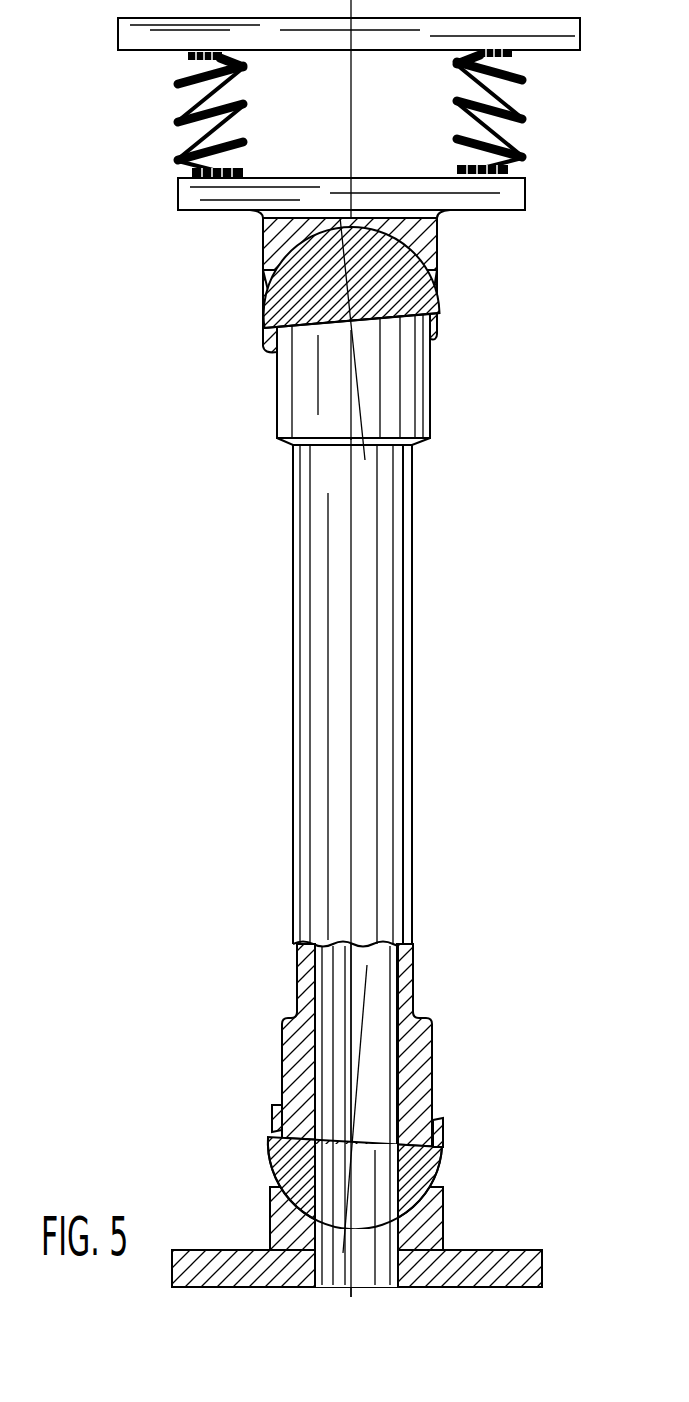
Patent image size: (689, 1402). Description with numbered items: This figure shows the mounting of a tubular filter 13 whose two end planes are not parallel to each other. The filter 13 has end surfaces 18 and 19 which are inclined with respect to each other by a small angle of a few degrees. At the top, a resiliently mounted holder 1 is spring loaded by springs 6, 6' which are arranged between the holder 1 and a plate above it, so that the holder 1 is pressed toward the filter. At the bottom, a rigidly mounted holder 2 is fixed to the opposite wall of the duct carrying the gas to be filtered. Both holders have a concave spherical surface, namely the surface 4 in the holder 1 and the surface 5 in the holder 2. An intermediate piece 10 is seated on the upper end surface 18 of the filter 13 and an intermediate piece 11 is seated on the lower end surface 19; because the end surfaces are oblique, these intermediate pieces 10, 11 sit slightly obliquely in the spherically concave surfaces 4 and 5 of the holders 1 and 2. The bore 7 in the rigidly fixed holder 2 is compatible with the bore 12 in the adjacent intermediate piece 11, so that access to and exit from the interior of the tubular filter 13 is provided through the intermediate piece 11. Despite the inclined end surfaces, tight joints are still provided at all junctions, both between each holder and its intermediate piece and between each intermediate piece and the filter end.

The holder 1 is at (503, 198).
The holder 2 is at (523, 1263).
The concave spherical surface 4 is at (403, 236).
The concave spherical surface 5 is at (410, 1207).
The spring 6 is at (186, 114).
The spring 6' is at (512, 111).
The bore 7 is at (312, 1229).
The intermediate piece 10 is at (410, 286).
The intermediate piece 11 is at (407, 1160).
The bore 12 is at (315, 1159).
The filter 13 is at (383, 686).
The end surface 18 is at (392, 330).
The end surface 19 is at (412, 1115).